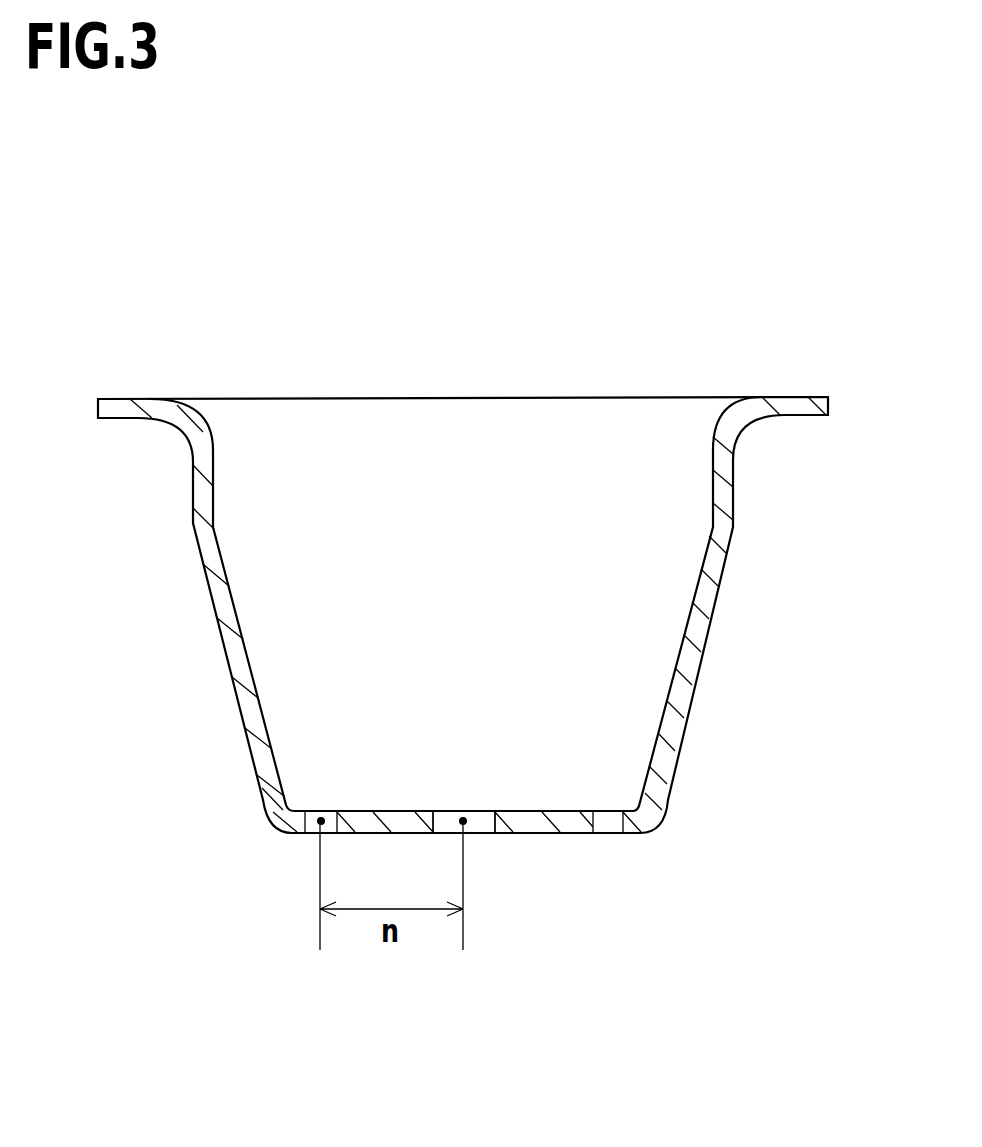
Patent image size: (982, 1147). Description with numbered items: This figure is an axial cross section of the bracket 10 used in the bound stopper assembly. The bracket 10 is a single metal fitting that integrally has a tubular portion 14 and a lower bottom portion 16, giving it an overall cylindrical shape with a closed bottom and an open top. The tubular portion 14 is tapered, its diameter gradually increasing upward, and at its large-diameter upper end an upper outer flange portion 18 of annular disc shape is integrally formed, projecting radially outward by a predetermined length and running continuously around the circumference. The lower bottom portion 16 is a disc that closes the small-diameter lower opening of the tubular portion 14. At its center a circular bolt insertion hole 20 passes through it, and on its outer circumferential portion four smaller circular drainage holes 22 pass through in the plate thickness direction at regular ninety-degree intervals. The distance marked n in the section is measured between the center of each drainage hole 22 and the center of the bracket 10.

The bracket 10 is at (588, 350).
The tubular portion 14 is at (230, 603).
The lower bottom portion 16 is at (532, 822).
The upper outer flange portion 18 is at (127, 408).
The bolt insertion hole 20 is at (485, 820).
The drainage holes 22 is at (308, 828).